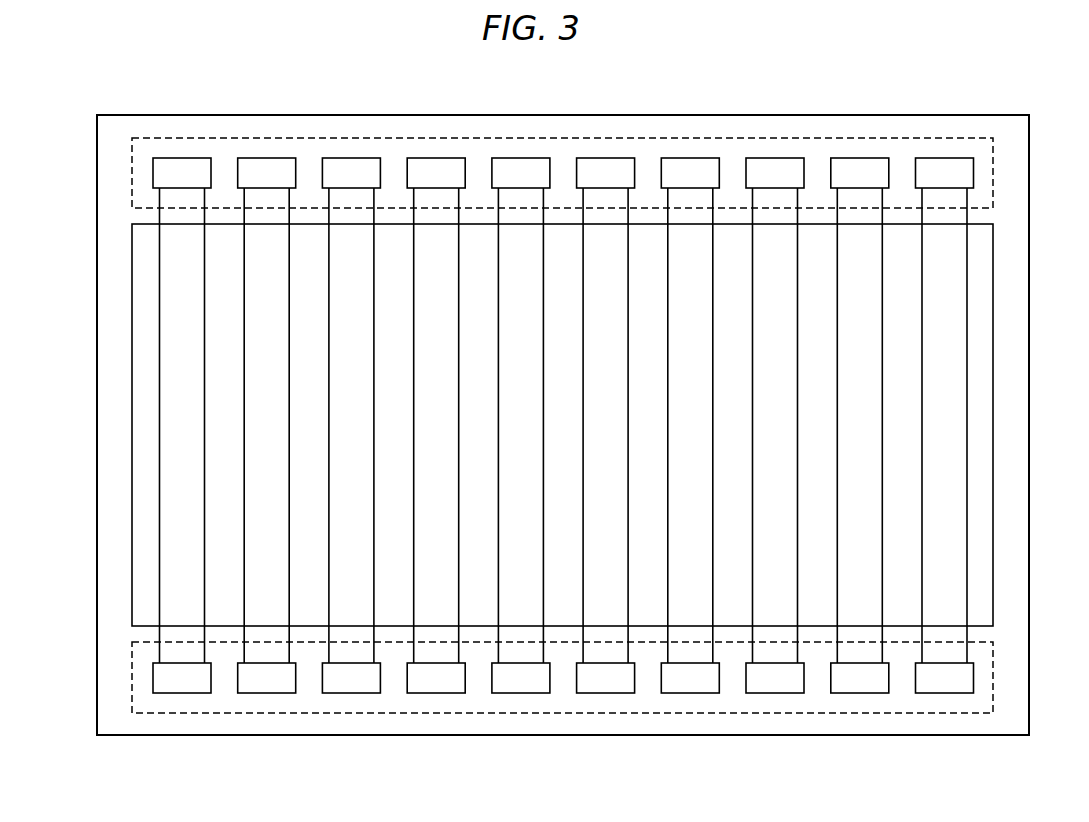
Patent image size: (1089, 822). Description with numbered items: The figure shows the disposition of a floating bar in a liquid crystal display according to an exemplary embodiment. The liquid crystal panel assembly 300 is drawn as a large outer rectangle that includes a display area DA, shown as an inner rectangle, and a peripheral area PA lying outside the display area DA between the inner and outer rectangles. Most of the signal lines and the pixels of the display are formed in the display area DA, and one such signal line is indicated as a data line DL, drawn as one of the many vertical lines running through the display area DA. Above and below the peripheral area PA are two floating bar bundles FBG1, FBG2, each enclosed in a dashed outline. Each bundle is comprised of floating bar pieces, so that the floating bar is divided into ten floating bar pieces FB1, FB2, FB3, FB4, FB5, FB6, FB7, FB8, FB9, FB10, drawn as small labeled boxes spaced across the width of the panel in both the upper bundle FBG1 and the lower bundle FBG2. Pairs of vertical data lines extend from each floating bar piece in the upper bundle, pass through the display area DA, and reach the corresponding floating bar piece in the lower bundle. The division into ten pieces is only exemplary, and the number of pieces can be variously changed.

The liquid crystal panel assembly 300 is at (1020, 107).
The peripheral area PA is at (1016, 378).
The display area DA is at (978, 474).
The data line DL is at (160, 388).
The floating bar bundle FBG1 is at (462, 138).
The floating bar bundle FBG2 is at (463, 713).
The floating bar piece FB1 is at (182, 425).
The floating bar piece FB2 is at (267, 425).
The floating bar piece FB3 is at (351, 425).
The floating bar piece FB4 is at (436, 425).
The floating bar piece FB5 is at (521, 425).
The floating bar piece FB6 is at (606, 425).
The floating bar piece FB7 is at (690, 425).
The floating bar piece FB8 is at (775, 425).
The floating bar piece FB9 is at (860, 425).
The floating bar piece FB10 is at (945, 425).